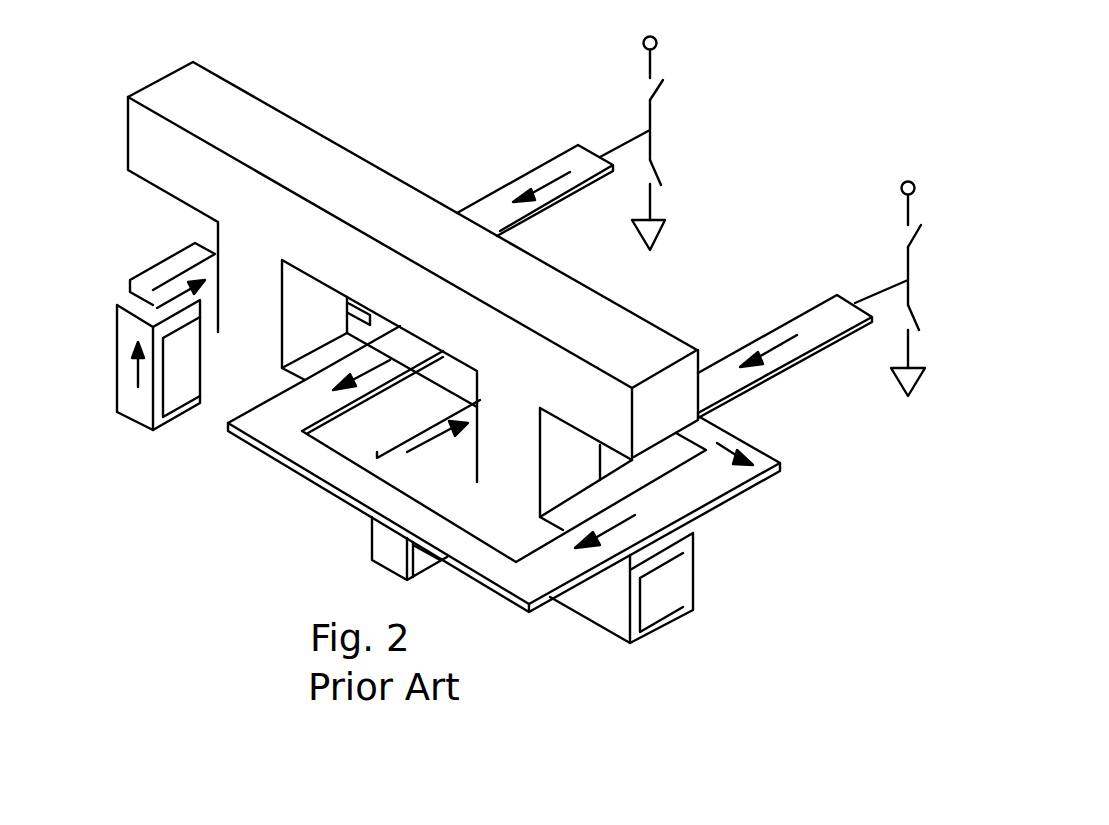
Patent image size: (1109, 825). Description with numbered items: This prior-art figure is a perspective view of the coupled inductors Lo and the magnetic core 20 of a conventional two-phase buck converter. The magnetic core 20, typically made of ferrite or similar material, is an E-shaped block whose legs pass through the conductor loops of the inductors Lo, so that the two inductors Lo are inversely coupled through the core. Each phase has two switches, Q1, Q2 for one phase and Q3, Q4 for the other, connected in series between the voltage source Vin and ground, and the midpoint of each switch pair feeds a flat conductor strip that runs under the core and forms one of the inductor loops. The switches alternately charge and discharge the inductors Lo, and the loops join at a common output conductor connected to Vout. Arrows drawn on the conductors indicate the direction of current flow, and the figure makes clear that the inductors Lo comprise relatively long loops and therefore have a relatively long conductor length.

The magnetic core 20 is at (413, 289).
The coupled inductors Lo is at (153, 258).
The voltage source Vin is at (748, 115).
The output voltage terminal Vout is at (360, 503).
The switch Q1 is at (580, 144).
The switch Q2 is at (676, 172).
The switch Q3 is at (829, 300).
The switch Q4 is at (934, 316).